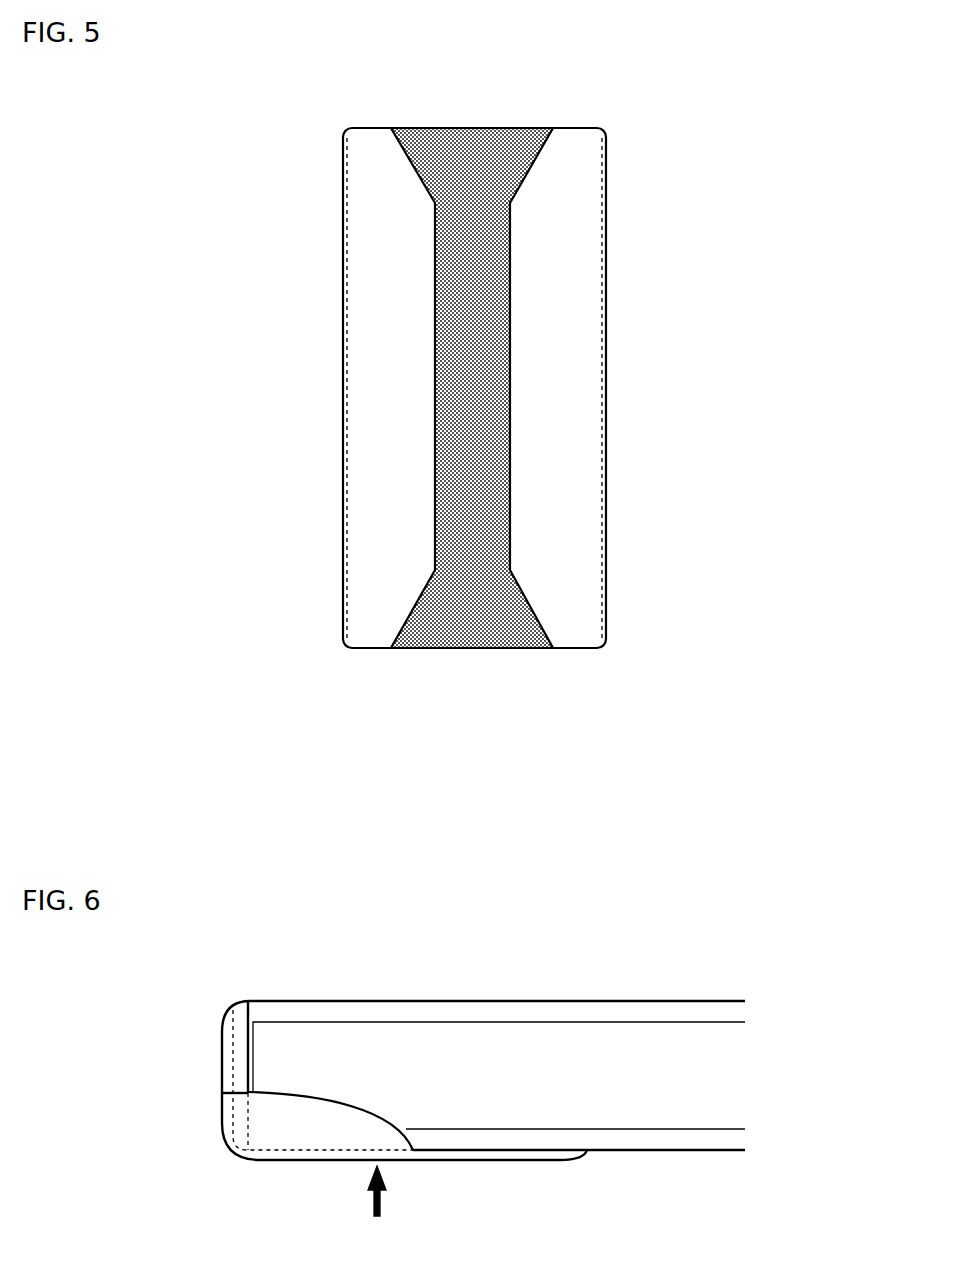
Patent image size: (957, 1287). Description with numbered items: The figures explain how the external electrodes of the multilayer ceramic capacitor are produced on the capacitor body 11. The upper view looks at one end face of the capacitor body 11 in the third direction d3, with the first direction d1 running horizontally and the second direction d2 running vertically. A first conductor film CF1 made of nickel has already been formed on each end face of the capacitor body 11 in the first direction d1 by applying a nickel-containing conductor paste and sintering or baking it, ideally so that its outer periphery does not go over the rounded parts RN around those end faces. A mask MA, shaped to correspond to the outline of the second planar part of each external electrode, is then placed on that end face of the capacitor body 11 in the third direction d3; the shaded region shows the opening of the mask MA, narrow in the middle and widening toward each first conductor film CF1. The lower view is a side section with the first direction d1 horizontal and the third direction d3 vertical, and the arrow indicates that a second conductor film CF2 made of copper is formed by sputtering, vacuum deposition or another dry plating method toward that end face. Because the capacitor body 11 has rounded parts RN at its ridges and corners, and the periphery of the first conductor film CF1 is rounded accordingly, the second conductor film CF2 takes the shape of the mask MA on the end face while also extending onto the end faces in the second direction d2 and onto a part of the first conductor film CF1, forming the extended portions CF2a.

In FIG. 5, the capacitor body 11 is at (366, 127).
In FIG. 6, the capacitor body 11 is at (497, 1000).
In FIG. 5, the mask MA is at (470, 145).
In FIG. 5, the first conductor film CF1 is at (343, 384).
In FIG. 6, the first conductor film CF1 is at (222, 1050).
In FIG. 6, the second conductor film CF2 is at (452, 1162).
In FIG. 6, the extended portion CF2a is at (317, 1128).
In FIG. 6, the rounded parts RN is at (240, 1037).
In FIG. 5, the first direction d1 is at (500, 103).
In FIG. 6, the first direction d1 is at (644, 975).
In FIG. 5, the second direction d2 is at (514, 116).
In FIG. 6, the third direction d3 is at (658, 988).